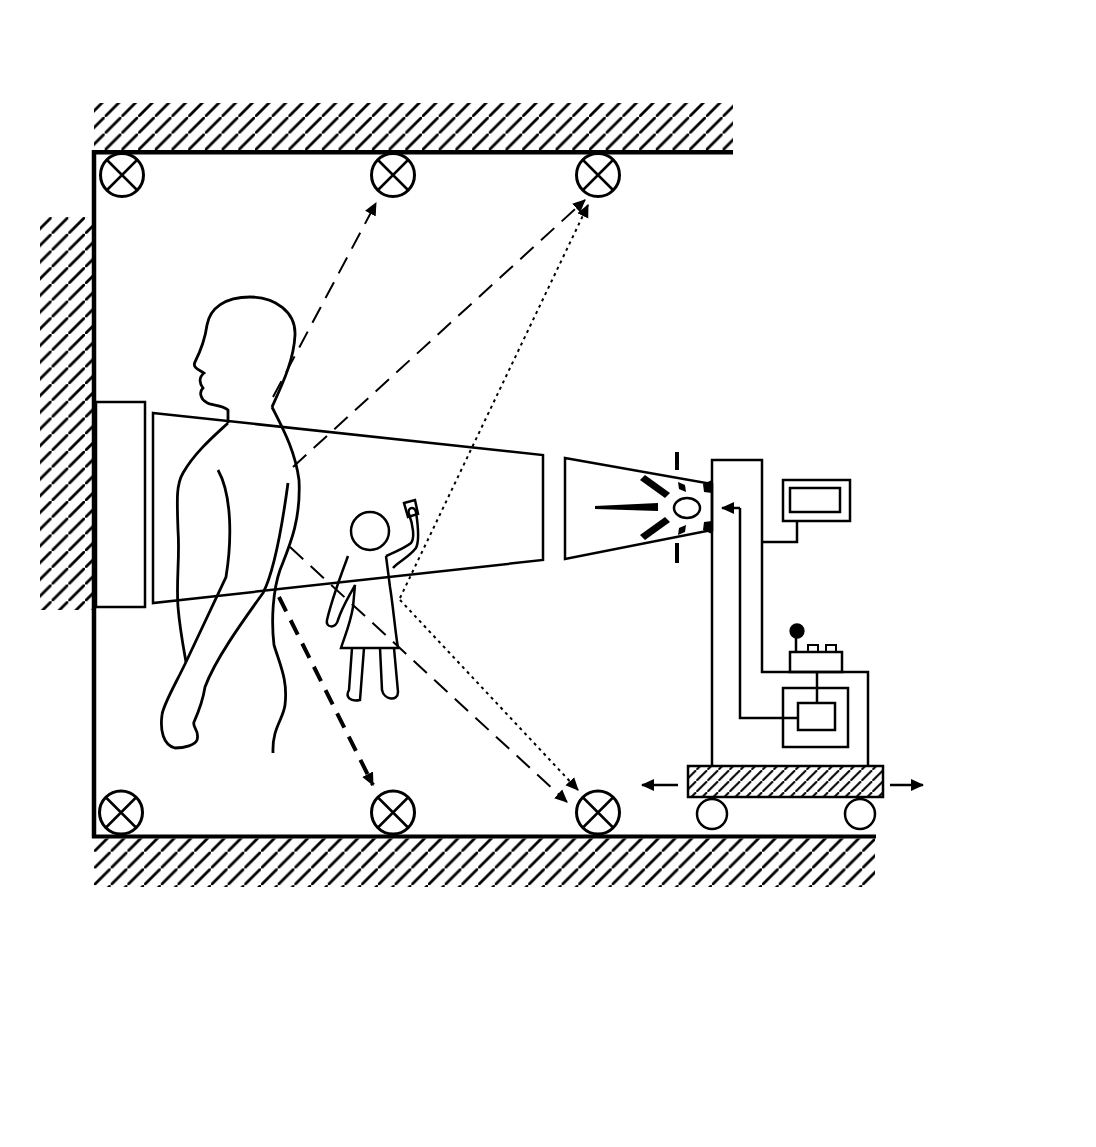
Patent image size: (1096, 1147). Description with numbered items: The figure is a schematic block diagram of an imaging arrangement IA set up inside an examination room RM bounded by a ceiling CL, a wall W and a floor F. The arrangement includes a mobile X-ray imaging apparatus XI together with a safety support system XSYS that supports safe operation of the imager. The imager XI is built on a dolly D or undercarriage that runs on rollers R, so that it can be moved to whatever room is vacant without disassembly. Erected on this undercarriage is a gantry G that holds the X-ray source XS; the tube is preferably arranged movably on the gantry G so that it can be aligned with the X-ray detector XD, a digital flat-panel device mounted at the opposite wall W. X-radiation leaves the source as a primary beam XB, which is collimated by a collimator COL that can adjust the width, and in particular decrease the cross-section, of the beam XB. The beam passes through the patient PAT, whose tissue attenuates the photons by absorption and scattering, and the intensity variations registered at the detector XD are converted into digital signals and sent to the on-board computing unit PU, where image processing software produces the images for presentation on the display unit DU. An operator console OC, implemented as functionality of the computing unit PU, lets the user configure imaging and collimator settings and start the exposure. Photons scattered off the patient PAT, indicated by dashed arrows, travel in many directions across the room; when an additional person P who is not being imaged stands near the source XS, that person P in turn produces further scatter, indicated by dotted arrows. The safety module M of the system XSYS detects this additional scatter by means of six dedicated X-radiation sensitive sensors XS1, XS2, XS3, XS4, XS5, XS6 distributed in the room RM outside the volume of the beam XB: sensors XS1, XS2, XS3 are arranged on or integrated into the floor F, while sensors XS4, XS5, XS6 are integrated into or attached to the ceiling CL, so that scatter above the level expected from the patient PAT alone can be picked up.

The imaging arrangement IA is at (819, 78).
The safety support system XSYS is at (748, 258).
The X-ray imaging apparatus XI is at (741, 446).
The X-ray source XS is at (599, 473).
The collimator COL is at (684, 467).
The primary X-ray beam XB is at (498, 545).
The X-ray detector XD is at (127, 402).
The patient PAT is at (247, 312).
The additional person P is at (393, 597).
The X-radiation sensitive sensor XS1 is at (125, 836).
The X-radiation sensitive sensor XS2 is at (393, 836).
The X-radiation sensitive sensor XS3 is at (598, 836).
The X-radiation sensitive sensor XS4 is at (598, 158).
The X-radiation sensitive sensor XS5 is at (393, 158).
The X-radiation sensitive sensor XS6 is at (124, 158).
The examination room RM is at (437, 255).
The ceiling CL is at (710, 154).
The wall W is at (93, 698).
The floor F is at (815, 848).
The display unit DU is at (836, 480).
The operator console OC is at (823, 630).
The computing unit PU is at (848, 707).
The safety module M is at (835, 722).
The dolly D is at (703, 766).
The rollers R is at (851, 826).
The gantry G is at (714, 590).